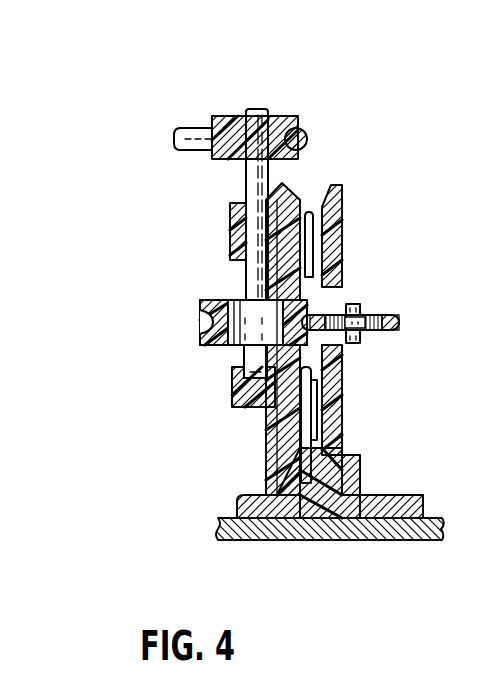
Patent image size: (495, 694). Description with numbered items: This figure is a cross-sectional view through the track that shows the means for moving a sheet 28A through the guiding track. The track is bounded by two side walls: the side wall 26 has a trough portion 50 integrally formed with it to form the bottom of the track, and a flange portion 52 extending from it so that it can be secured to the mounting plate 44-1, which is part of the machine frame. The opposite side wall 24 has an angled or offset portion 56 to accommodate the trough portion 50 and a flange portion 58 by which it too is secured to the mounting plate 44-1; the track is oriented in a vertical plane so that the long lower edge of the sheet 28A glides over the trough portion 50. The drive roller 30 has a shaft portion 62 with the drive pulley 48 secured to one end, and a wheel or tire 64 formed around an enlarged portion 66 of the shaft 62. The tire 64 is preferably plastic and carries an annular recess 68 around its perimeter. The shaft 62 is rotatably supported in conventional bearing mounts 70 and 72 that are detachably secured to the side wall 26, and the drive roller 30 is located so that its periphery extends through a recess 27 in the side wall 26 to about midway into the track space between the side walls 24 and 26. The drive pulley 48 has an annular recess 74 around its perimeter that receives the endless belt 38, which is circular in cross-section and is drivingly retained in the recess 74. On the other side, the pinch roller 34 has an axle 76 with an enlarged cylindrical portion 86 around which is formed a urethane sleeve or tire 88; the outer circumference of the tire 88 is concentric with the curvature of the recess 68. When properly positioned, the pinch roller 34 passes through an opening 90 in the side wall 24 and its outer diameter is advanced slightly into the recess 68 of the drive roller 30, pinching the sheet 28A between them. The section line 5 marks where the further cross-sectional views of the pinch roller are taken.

The section line 5- 5 is at (362, 167).
The side wall 24 is at (342, 236).
The side wall 26 is at (283, 205).
The recess 27 is at (298, 354).
The sheet 28A is at (309, 257).
The drive roller 30 is at (213, 301).
The pinch roller 34 is at (401, 323).
The endless belt 38 is at (308, 134).
The mounting plate 44-1 is at (239, 542).
The drive pulley 48 is at (229, 117).
The trough portion 50 is at (330, 490).
The flange portion 52 is at (237, 505).
The angled or offset portion 56 is at (360, 460).
The flange portion 58 is at (420, 497).
The shaft portion 62 is at (250, 182).
The wheel or tire 64 is at (210, 310).
The enlarged portion 66 is at (241, 305).
The annular recess 68 is at (205, 325).
The bearing mount 70 is at (236, 400).
The bearing mount 72 is at (232, 226).
The annular recess 74 is at (210, 136).
The axle 76 is at (352, 312).
The enlarged cylindrical portion 86 is at (362, 330).
The sleeve or tire 88 is at (392, 320).
The opening 90 is at (334, 376).